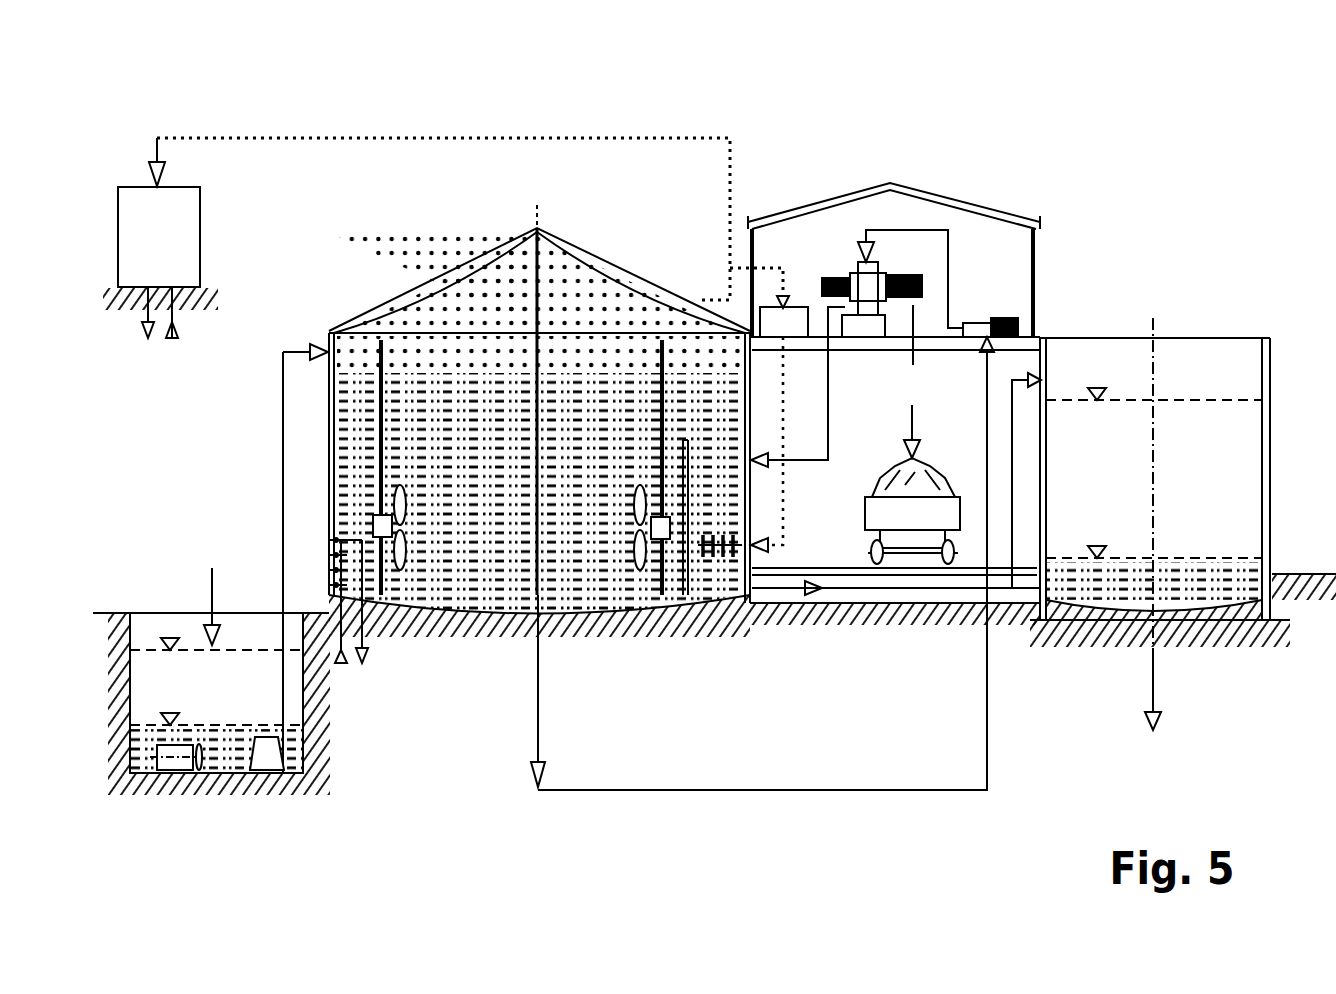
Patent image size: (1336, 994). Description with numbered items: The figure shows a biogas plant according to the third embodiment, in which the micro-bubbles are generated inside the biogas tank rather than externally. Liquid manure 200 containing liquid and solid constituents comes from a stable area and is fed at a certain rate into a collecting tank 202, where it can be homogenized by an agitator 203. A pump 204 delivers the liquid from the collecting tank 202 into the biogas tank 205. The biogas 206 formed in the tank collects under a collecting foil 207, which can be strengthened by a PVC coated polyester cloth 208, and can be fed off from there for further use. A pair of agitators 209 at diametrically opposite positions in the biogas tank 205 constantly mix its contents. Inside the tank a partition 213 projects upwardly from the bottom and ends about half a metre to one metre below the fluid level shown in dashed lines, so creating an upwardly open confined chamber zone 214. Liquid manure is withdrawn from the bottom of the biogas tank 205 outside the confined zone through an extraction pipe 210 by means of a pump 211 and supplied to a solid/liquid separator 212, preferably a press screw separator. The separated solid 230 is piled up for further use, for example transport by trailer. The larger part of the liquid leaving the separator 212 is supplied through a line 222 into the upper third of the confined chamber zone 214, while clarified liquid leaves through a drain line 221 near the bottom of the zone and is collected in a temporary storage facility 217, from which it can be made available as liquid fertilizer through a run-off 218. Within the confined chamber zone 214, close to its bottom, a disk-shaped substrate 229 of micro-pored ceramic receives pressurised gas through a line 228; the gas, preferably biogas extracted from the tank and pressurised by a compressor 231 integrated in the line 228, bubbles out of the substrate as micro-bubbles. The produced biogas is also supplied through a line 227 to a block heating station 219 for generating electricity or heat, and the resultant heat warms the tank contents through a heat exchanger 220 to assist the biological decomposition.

The liquid manure 200 is at (212, 581).
The collecting tank 202 is at (152, 675).
The agitator 203 is at (168, 773).
The pump 204 is at (281, 773).
The biogas tank 205 is at (567, 542).
The biogas 206 is at (590, 313).
The collecting foil 207 is at (467, 282).
The PVC coated polyester cloth 208 is at (380, 300).
The agitators 209 is at (672, 675).
The extraction pipe 210 is at (759, 598).
The pump 211 is at (1000, 318).
The solid/liquid separator 212 is at (895, 273).
The partition 213 is at (752, 493).
The confined chamber zone 214 is at (700, 585).
The temporary storage facility 217 is at (1172, 445).
The run-off 218 is at (1153, 712).
The block heating station 219 is at (159, 212).
The heat exchanger 220 is at (256, 503).
The drain line 221 is at (925, 590).
The line 222 is at (830, 400).
The line 227 is at (545, 136).
The line 228 is at (783, 420).
The disk-shaped substrate 229 is at (753, 620).
The separated solid 230 is at (912, 463).
The compressor 231 is at (792, 322).